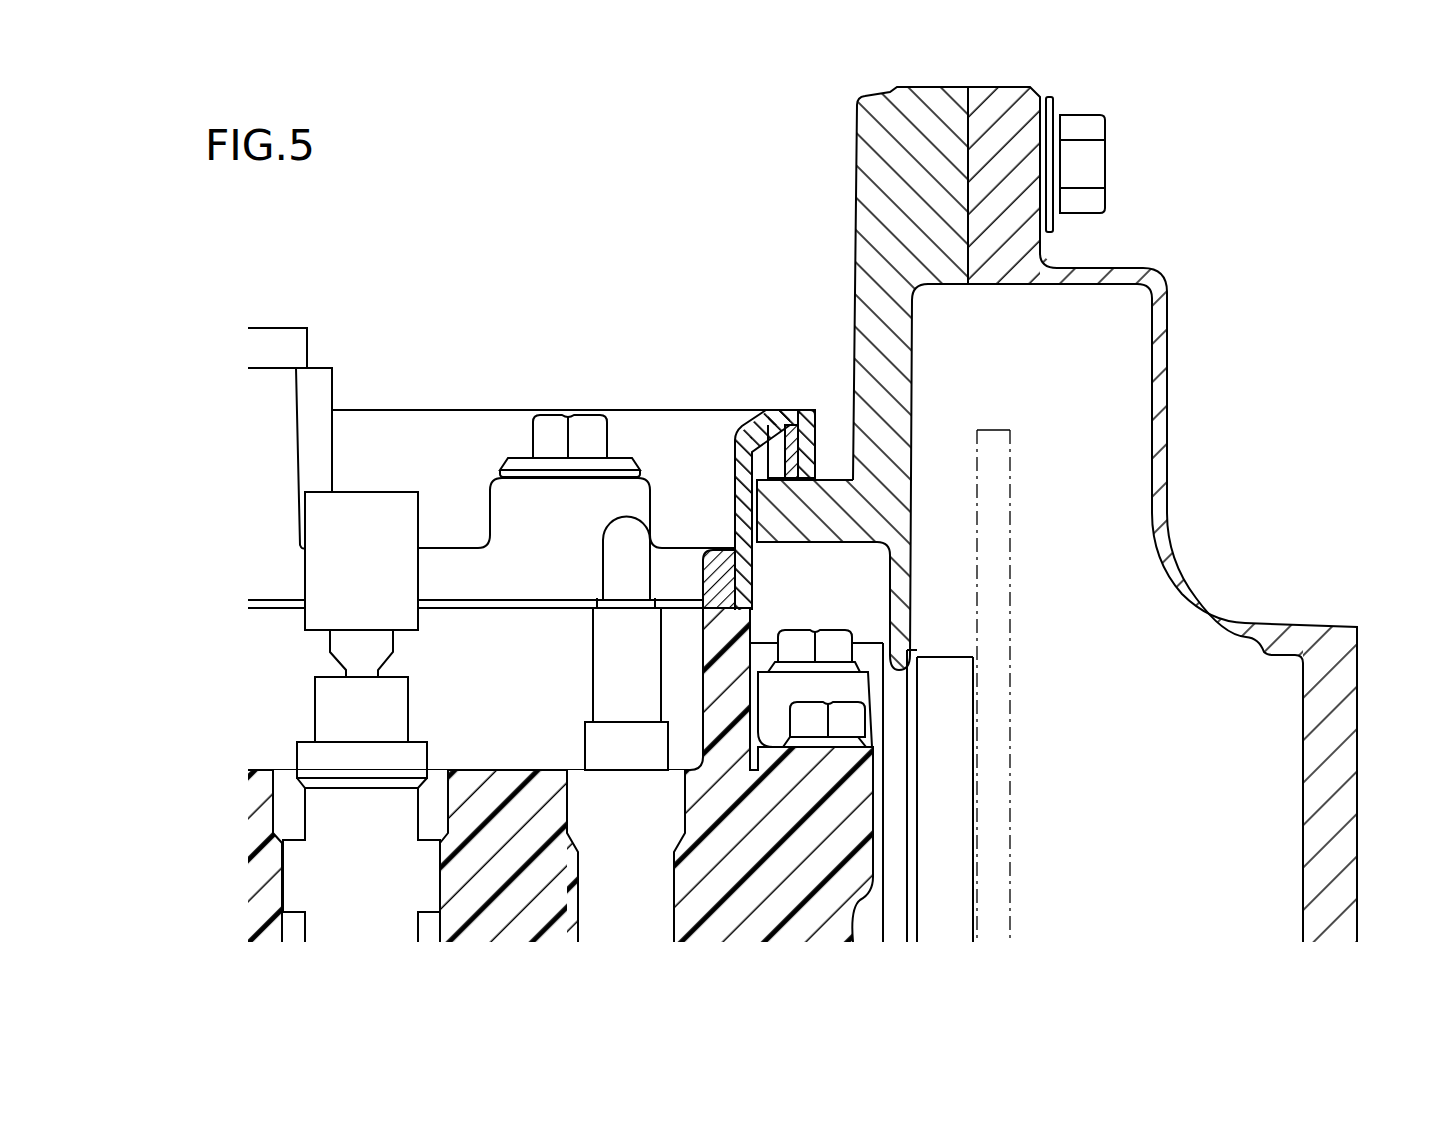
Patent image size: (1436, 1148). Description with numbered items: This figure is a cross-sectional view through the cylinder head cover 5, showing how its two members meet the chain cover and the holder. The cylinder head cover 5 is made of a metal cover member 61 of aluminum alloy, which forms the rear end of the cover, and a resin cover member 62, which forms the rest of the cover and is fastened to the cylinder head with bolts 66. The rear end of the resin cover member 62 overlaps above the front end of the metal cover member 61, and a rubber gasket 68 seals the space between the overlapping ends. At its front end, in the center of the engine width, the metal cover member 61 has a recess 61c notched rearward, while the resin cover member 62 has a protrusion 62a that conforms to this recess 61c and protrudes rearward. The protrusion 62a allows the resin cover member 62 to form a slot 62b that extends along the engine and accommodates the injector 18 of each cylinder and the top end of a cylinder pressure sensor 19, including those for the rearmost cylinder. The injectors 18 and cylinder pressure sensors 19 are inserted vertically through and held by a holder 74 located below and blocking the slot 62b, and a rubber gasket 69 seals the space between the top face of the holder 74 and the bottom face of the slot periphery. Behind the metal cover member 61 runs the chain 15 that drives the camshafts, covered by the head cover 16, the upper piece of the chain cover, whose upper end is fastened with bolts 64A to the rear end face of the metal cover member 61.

The cylinder head cover 5 is at (835, 212).
The metal cover member 61 is at (850, 316).
The resin cover member 62 is at (783, 405).
The protrusion 62a is at (828, 420).
The slot 62b is at (535, 548).
The recess 61c is at (757, 512).
The rubber gasket 68 is at (805, 456).
The rubber gasket 69 is at (735, 578).
The bolts 66 is at (585, 425).
The cylinder pressure sensor 19 is at (600, 670).
The injector 18 is at (335, 712).
The chain 15 is at (1012, 662).
The holder 74 is at (848, 828).
The bolts 64A is at (1085, 115).
The head cover 16 is at (1159, 401).